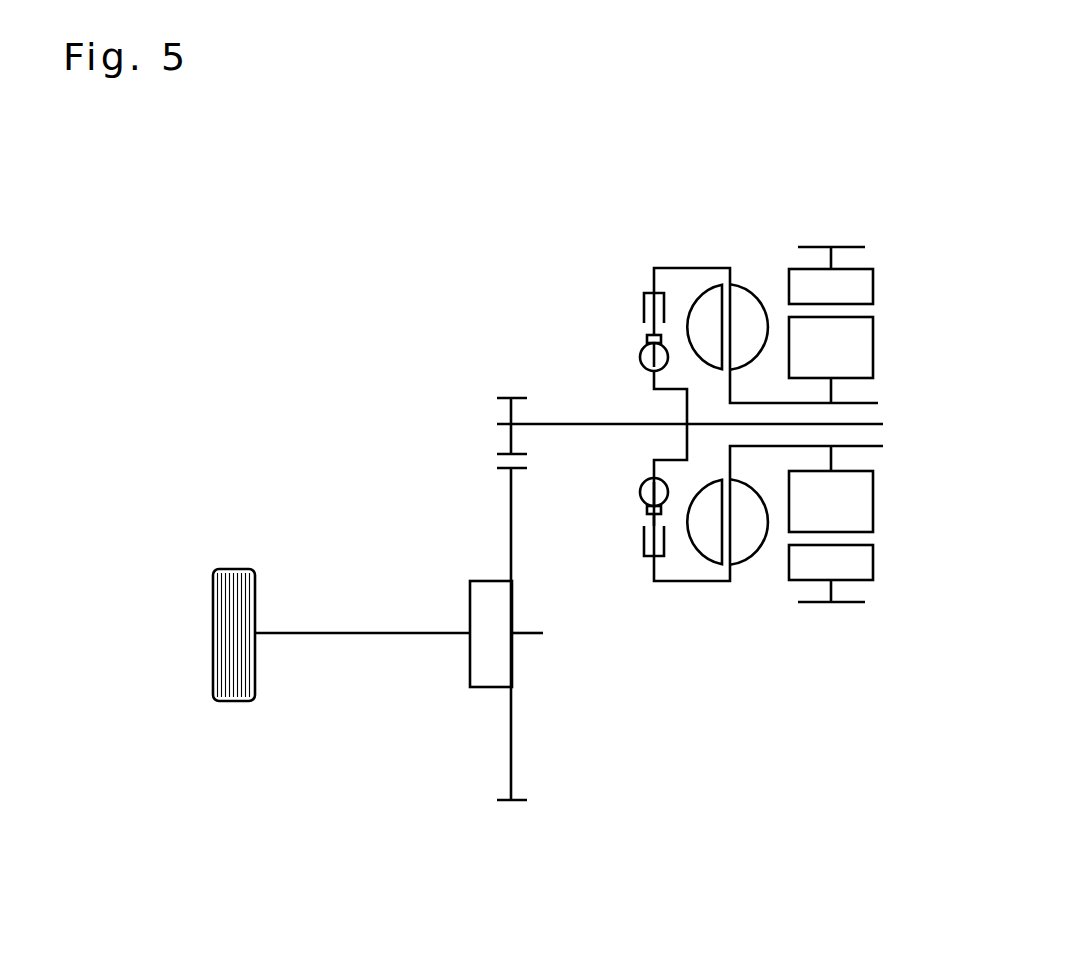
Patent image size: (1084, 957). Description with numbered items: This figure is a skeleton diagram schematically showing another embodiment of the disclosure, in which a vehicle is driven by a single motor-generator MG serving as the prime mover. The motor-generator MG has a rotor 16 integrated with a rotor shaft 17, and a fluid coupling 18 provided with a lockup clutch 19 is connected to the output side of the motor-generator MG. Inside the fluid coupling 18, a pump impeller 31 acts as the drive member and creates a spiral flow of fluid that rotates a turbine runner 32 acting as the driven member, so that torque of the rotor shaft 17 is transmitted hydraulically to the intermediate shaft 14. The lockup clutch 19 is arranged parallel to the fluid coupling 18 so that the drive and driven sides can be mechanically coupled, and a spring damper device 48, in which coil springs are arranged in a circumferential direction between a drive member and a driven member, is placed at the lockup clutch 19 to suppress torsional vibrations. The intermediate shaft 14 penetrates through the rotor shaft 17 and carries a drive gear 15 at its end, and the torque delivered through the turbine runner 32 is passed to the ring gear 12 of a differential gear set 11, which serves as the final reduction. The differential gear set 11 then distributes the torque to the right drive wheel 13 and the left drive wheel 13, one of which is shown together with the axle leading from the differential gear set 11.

The differential gear set 11 is at (485, 588).
The ring gear 12 is at (522, 472).
The drive wheel 13 is at (239, 569).
The intermediate shaft 14 is at (606, 428).
The drive gear 15 is at (508, 393).
The rotor 16 is at (875, 347).
The rotor shaft 17 is at (868, 403).
The fluid coupling 18 is at (726, 374).
The lockup clutch 19 is at (641, 310).
The pump impeller 31 is at (740, 298).
The turbine runner 32 is at (708, 302).
The spring damper device 48 is at (640, 359).
The motor-generator MG is at (863, 391).